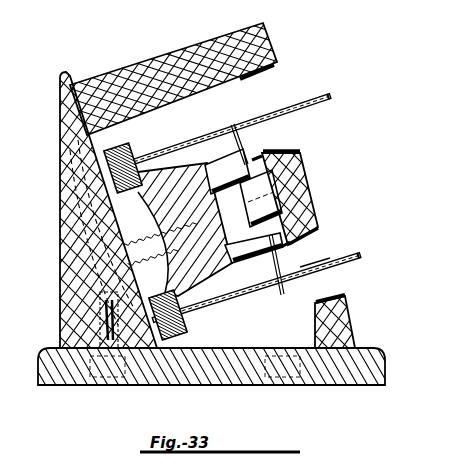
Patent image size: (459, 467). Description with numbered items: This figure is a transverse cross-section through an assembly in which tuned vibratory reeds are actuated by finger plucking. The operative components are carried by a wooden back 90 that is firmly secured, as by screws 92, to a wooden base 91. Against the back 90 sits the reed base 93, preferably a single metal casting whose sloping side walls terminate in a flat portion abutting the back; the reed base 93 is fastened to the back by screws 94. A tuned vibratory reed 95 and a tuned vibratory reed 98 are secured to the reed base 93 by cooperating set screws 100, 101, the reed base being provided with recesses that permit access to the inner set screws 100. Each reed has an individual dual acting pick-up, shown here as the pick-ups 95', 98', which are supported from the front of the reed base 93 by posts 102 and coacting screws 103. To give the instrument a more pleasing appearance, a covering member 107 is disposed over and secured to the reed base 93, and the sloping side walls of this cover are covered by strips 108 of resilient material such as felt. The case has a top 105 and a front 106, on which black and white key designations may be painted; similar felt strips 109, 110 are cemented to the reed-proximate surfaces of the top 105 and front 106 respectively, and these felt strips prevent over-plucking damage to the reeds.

The back 90 is at (68, 77).
The base 91 is at (288, 382).
The screws 92 is at (90, 383).
The reed base 93 is at (97, 152).
The screws 94 is at (80, 247).
The tuned vibratory reed 95 is at (278, 273).
The dual acting pick-up 95' is at (320, 274).
The tuned vibratory reed 98 is at (221, 121).
The dual acting pick-up 98' is at (257, 196).
The inner set screw 100 is at (125, 190).
The set screw 101 is at (118, 150).
The post 102 is at (238, 165).
The screw 103 is at (253, 160).
The top 105 is at (166, 60).
The front 106 is at (353, 312).
The covering member 107 is at (305, 168).
The strips of resilient material 108 is at (285, 150).
The felt strip 109 is at (272, 68).
The felt strip 110 is at (337, 296).